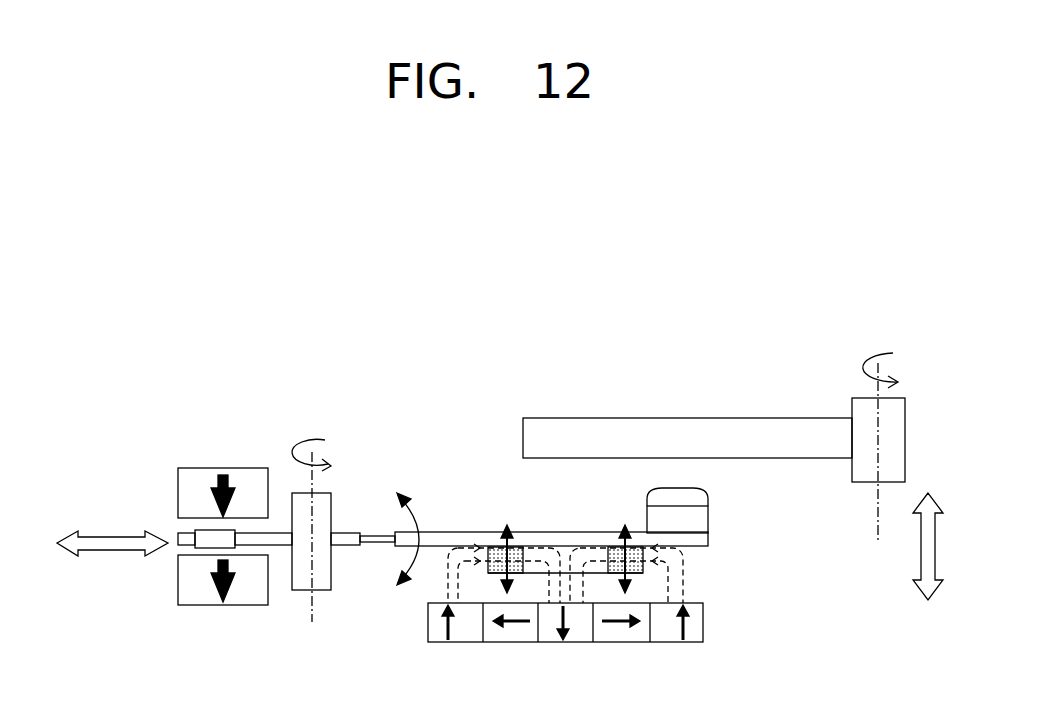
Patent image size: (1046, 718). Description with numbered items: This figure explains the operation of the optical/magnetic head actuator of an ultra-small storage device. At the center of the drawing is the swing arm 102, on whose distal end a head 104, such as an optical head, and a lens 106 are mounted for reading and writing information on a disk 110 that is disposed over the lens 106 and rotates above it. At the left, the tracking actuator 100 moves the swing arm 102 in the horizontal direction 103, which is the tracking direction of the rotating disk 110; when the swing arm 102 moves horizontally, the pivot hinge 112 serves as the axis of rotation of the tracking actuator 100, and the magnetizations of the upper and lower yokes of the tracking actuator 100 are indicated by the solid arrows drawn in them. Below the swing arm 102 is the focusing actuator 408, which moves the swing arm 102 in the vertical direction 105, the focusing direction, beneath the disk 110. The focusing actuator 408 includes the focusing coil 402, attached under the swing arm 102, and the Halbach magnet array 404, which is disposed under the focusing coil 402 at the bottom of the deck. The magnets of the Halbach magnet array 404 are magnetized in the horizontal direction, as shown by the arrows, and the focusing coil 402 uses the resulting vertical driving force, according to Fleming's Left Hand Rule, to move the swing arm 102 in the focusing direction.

The tracking actuator 100 is at (229, 456).
The swing arm 102 is at (442, 538).
The horizontal direction 103 is at (112, 537).
The head 104 is at (700, 520).
The vertical direction 105 is at (923, 555).
The lens 106 is at (702, 500).
The disk 110 is at (695, 428).
The pivot hinge 112 is at (325, 500).
The focusing coil 402 is at (665, 562).
The Halbach magnet array 404 is at (705, 623).
The focusing actuator 408 is at (635, 583).